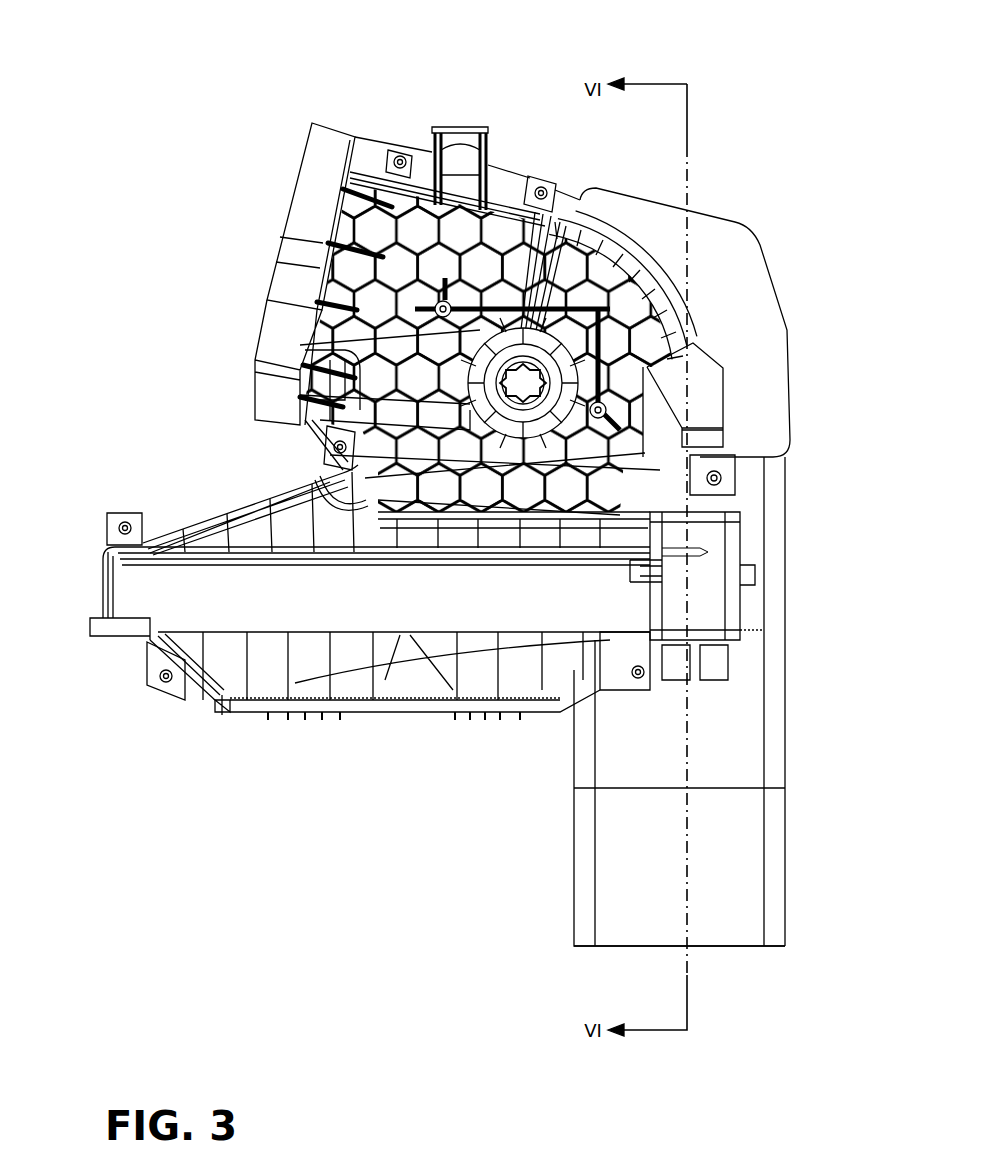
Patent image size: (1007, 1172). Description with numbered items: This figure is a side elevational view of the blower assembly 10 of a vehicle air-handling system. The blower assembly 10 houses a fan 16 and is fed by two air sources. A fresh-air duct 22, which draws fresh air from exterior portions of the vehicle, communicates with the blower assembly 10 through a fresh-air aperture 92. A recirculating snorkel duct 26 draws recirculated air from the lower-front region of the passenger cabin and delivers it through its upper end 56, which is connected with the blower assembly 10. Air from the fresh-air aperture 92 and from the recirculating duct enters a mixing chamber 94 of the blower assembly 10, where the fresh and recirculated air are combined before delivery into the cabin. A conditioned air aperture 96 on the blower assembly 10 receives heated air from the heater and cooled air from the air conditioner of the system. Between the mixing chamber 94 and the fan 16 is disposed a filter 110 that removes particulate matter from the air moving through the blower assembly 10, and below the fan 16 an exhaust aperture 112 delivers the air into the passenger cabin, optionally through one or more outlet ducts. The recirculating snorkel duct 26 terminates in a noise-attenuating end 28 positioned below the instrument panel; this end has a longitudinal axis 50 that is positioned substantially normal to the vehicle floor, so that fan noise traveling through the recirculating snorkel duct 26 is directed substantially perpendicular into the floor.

The blower assembly 10 is at (355, 82).
The fresh-air duct 22 is at (312, 162).
The fresh-air aperture 92 is at (272, 272).
The mixing chamber 94 is at (450, 381).
The upper end 56 is at (735, 222).
The conditioned air aperture 96 is at (713, 592).
The recirculating snorkel duct 26 is at (747, 735).
The longitudinal axis 50 is at (688, 862).
The noise-attenuating end 28 is at (737, 948).
The fan 16 is at (195, 606).
The filter 110 is at (267, 568).
The exhaust aperture 112 is at (367, 714).